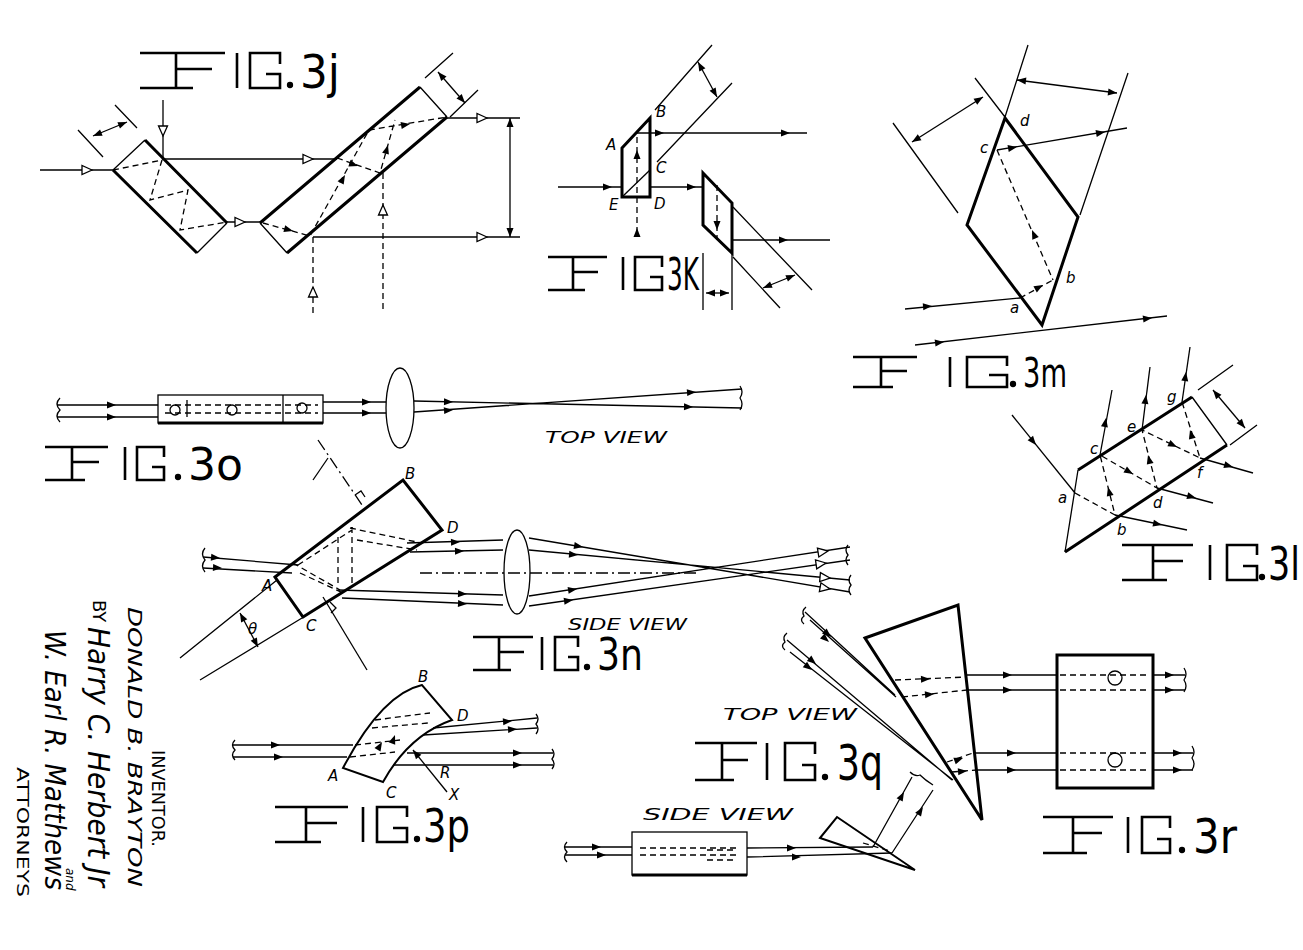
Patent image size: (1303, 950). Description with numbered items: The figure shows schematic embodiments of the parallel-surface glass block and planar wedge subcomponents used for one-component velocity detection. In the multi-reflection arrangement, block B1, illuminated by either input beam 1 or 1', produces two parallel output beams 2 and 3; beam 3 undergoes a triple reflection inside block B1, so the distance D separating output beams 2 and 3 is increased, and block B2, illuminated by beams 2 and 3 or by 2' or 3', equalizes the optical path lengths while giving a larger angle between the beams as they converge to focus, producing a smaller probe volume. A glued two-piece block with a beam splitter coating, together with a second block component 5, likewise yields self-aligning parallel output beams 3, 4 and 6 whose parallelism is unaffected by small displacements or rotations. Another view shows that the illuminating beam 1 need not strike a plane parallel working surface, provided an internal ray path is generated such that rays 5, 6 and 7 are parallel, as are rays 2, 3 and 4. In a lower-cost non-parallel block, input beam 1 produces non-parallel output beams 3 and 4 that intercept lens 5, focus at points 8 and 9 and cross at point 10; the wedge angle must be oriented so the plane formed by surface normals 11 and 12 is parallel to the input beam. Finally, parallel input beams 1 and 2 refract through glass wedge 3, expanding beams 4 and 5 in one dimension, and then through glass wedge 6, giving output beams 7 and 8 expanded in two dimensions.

In FIG. 3J, the input beam 1 is at (76, 163).
In FIG. 3K, the input beam 1 is at (590, 201).
In FIG. 3M, the input beam 1 is at (973, 299).
In FIG. 3L, the input beam 1 is at (1043, 446).
In FIG. 3N, the input beam 1 is at (251, 548).
In FIG. 3Q, the input beam 1 is at (575, 868).
In FIG. 3R, the input beam 1 is at (849, 652).
In FIG. 3J, the alternate input beam 1' is at (172, 130).
In FIG. 3K, the alternate input beam 1' is at (620, 235).
In FIG. 3J, the output beam 2 is at (250, 145).
In FIG. 3M, the output beam 2 is at (1042, 330).
In FIG. 3L, the output beam 2 is at (1157, 527).
In FIG. 3N, the output beam 2 is at (358, 537).
In FIG. 3Q, the output beam 2 is at (575, 868).
In FIG. 3R, the output beam 2 is at (868, 706).
In FIG. 3J, the alternate input beam to block B2 2' is at (393, 243).
In FIG. 3J, the output beam 3 is at (244, 208).
In FIG. 3K, the output beam 3 is at (721, 173).
In FIG. 3M, the output beam 3 is at (1069, 138).
In FIG. 3L, the output beam 3 is at (1191, 500).
In FIG. 3O, the output beam 3 is at (544, 379).
In FIG. 3N, the output beam 3 is at (651, 549).
In FIG. 3Q, the output beam 3 is at (689, 867).
In FIG. 3R, the output beam 3 is at (930, 712).
In FIG. 3J, the alternate input beam to block B2 3' is at (323, 275).
In FIG. 3J, the output beam 4 is at (483, 107).
In FIG. 3K, the output beam 4 is at (676, 200).
In FIG. 3L, the output beam 4 is at (1232, 469).
In FIG. 3O, the output beam 4 is at (336, 400).
In FIG. 3N, the output beam 4 is at (407, 602).
In FIG. 3Q, the output beam 4 is at (819, 869).
In FIG. 3R, the output beam 4 is at (987, 673).
In FIG. 3J, the lens 5 is at (416, 228).
In FIG. 3K, the lens 5 is at (722, 181).
In FIG. 3L, the lens 5 is at (1112, 419).
In FIG. 3O, the lens 5 is at (417, 381).
In FIG. 3N, the lens 5 is at (523, 530).
In FIG. 3Q, the lens 5 is at (780, 860).
In FIG. 3R, the lens 5 is at (997, 772).
In FIG. 3K, the glass wedge 6 is at (806, 240).
In FIG. 3L, the glass wedge 6 is at (1152, 397).
In FIG. 3Q, the glass wedge 6 is at (840, 821).
In FIG. 3R, the glass wedge 6 is at (1072, 653).
In FIG. 3L, the output beam 7 is at (1191, 374).
In FIG. 3Q, the output beam 7 is at (915, 812).
In FIG. 3R, the output beam 7 is at (1187, 682).
In FIG. 3N, the focus point 8 is at (659, 557).
In FIG. 3Q, the focus point 8 is at (913, 827).
In FIG. 3R, the focus point 8 is at (1193, 752).
In FIG. 3N, the focus point 9 is at (657, 586).
In FIG. 3O, the crossing point 10 is at (658, 400).
In FIG. 3N, the crossing point 10 is at (746, 572).
In FIG. 3N, the surface normal 11 is at (370, 669).
In FIG. 3N, the surface normal 12 is at (337, 472).
In FIG. 3J, the glass block B1 is at (170, 197).
In FIG. 3J, the glass block B2 is at (353, 183).
In FIG. 3J, the output beam separation distance D is at (516, 177).